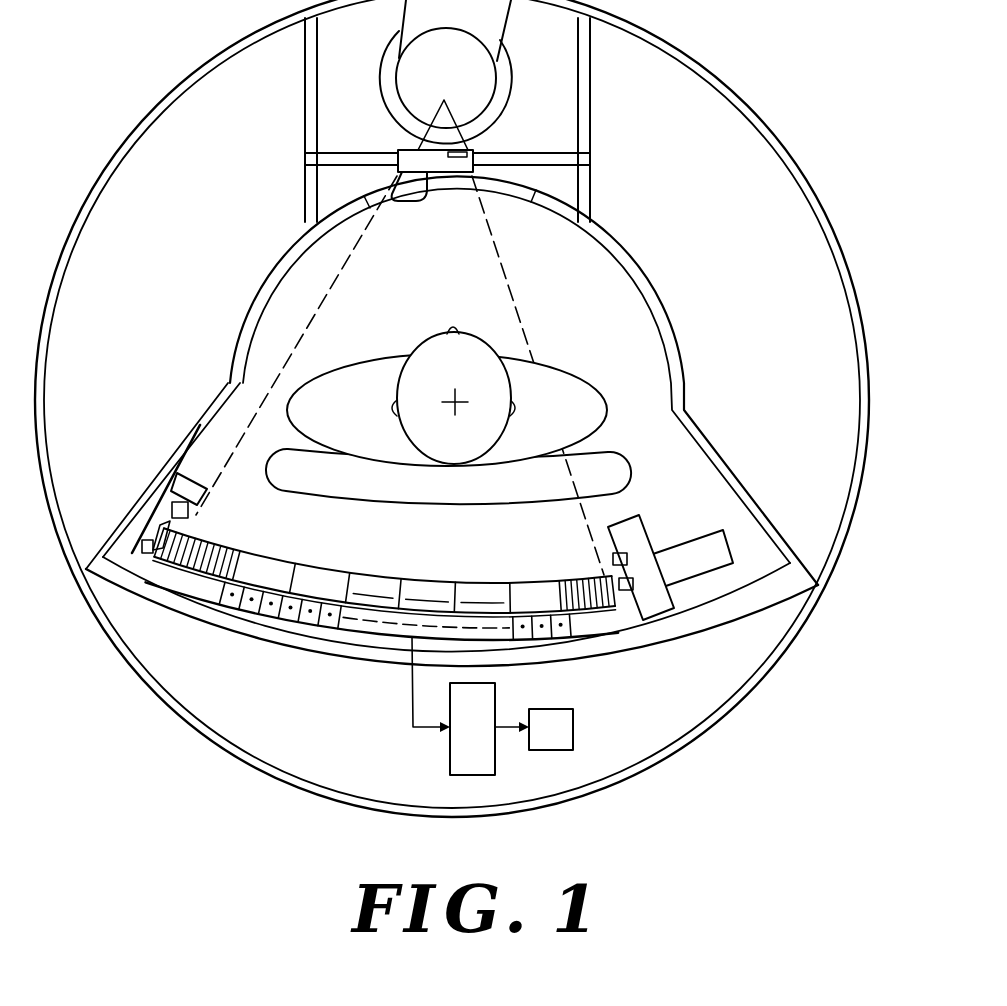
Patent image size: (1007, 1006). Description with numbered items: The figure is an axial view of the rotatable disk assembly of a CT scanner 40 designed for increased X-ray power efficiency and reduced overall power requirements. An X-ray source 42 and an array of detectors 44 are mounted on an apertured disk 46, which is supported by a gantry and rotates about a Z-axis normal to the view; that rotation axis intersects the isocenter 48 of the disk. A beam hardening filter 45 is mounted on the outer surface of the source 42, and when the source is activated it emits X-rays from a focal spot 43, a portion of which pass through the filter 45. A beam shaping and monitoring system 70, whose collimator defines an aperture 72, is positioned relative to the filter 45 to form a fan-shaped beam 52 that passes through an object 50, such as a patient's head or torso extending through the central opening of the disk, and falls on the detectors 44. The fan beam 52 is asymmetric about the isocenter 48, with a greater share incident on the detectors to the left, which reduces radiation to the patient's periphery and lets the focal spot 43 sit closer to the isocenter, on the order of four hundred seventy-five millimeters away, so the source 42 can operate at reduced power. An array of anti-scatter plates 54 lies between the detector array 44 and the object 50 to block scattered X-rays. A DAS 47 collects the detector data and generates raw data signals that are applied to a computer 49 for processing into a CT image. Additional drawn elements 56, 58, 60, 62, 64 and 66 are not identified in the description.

The CT scanner 40 is at (724, 735).
The X-ray source 42 is at (500, 102).
The focal spot 43 is at (444, 100).
The array of detectors 44 is at (230, 606).
The beam hardening filter 45 is at (464, 152).
The apertured disk 46 is at (826, 200).
The DAS 47 is at (486, 740).
The isocenter 48 is at (458, 398).
The computer 49 is at (566, 745).
The object 50 is at (580, 368).
The fan beam 52 is at (512, 286).
The array of anti-scatter plates 54 is at (214, 528).
The patient support 56 is at (634, 476).
The rail 58 is at (173, 478).
The detector array 60 is at (573, 628).
The signal bus 62 is at (456, 614).
The mounting bracket 64 is at (150, 513).
The motor 66 is at (703, 548).
The beam shaping and monitoring system 70 is at (393, 146).
The aperture 72 is at (392, 193).